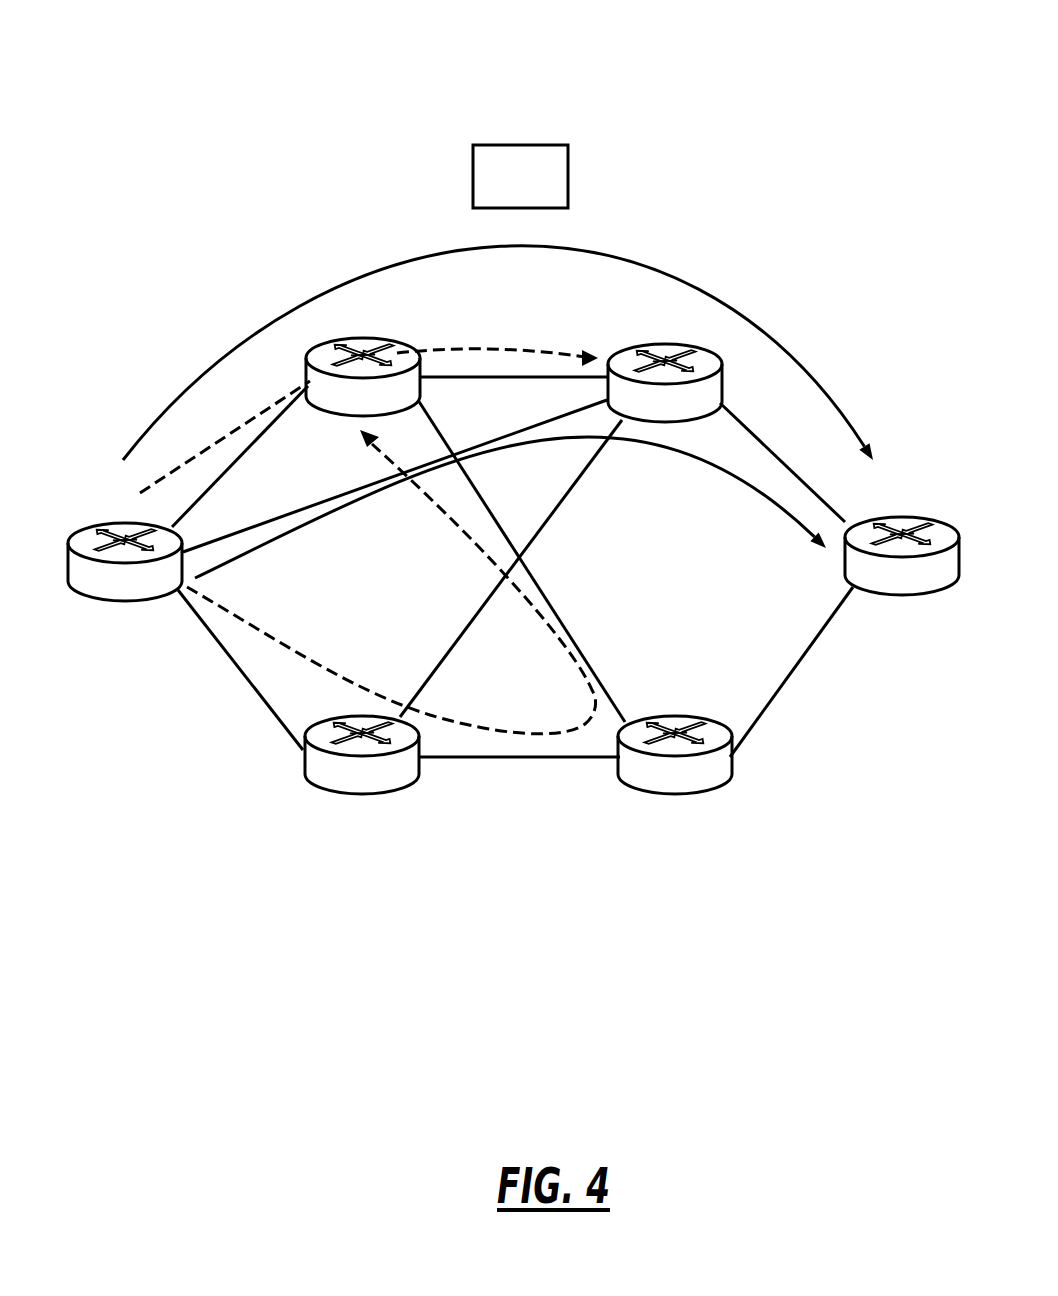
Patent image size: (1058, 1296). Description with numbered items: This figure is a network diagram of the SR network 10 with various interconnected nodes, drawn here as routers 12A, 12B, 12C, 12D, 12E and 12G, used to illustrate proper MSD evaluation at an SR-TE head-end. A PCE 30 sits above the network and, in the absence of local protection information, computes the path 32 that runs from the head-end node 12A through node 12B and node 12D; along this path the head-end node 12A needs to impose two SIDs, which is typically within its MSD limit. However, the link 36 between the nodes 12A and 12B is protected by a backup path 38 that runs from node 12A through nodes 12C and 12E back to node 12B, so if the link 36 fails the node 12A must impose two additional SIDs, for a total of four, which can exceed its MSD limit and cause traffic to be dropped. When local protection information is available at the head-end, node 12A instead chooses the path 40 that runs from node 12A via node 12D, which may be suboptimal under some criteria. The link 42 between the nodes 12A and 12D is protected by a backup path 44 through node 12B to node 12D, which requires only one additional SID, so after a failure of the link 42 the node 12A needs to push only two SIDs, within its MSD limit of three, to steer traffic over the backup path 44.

The SR network 10 is at (526, 62).
The PCE 30 is at (568, 177).
The path 32 is at (720, 300).
The node 12A is at (105, 598).
The node 12B is at (388, 335).
The node 12C is at (310, 785).
The node 12D is at (626, 345).
The node 12E is at (627, 786).
The node 12G is at (905, 598).
The link 36 is at (258, 433).
The backup path 38 is at (277, 648).
The path 40 is at (650, 445).
The link 42 is at (473, 452).
The backup path 44 is at (452, 350).